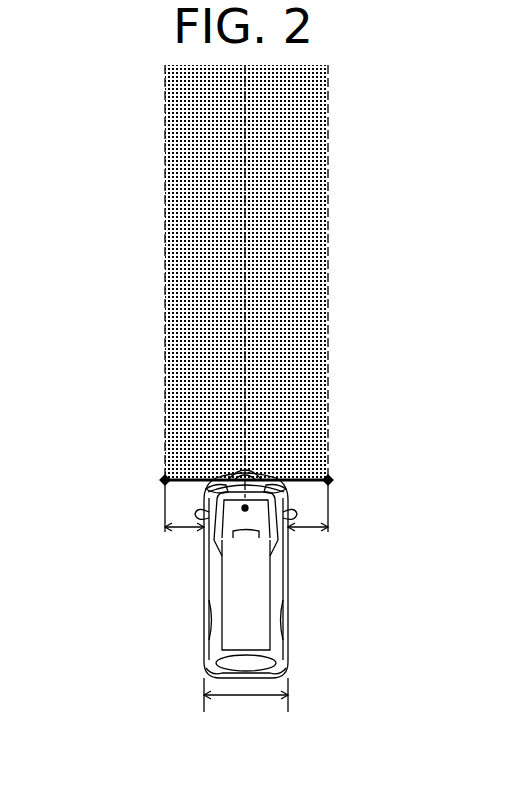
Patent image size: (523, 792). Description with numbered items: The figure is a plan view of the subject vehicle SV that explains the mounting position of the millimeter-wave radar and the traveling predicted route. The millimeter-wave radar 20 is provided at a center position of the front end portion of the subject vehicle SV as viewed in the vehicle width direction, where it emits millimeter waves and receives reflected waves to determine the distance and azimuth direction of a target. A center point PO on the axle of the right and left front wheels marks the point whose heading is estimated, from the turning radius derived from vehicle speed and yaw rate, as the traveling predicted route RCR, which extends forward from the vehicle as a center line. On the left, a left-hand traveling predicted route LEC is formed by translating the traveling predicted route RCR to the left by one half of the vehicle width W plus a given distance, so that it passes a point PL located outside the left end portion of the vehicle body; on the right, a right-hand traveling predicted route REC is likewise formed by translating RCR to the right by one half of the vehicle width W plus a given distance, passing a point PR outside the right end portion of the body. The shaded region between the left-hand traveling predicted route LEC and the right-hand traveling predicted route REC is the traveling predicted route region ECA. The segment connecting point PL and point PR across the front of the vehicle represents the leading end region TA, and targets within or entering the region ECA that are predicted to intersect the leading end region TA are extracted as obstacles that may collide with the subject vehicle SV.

The traveling predicted route region ECA is at (168, 108).
The left-hand traveling predicted route LEC is at (165, 176).
The right-hand traveling predicted route REC is at (329, 176).
The traveling predicted route RCR is at (246, 113).
The leading end region TA is at (305, 477).
The point PL is at (159, 480).
The point PR is at (334, 481).
The subject vehicle SV is at (290, 631).
The millimeter-wave radar 20 is at (230, 466).
The center point PO is at (243, 511).
The vehicle width W is at (246, 703).